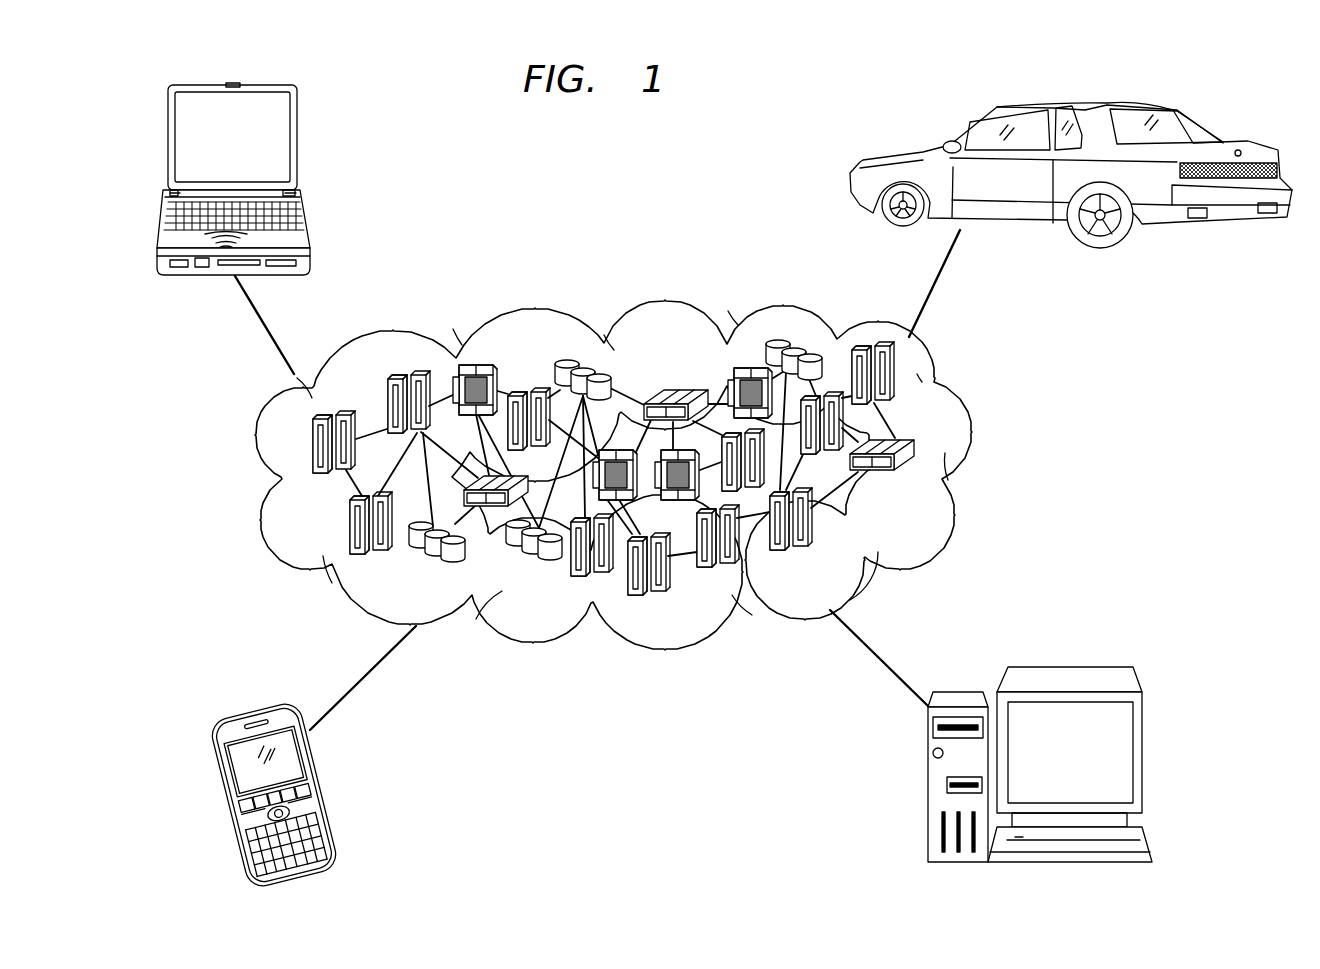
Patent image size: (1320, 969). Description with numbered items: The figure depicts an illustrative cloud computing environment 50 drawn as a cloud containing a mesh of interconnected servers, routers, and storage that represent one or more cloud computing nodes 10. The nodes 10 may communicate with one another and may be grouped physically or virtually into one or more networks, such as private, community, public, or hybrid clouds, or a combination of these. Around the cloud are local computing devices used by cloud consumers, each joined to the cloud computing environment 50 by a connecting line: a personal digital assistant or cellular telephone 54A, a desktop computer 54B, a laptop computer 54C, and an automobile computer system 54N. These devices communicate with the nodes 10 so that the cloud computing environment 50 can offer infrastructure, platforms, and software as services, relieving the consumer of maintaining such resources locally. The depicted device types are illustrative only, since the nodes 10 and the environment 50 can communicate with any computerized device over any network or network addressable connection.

The cloud computing nodes 10 is at (934, 484).
The cloud computing environment 50 is at (968, 398).
The personal digital assistant or cellular telephone 54A is at (216, 779).
The desktop computer 54B is at (1070, 668).
The laptop computer 54C is at (168, 130).
The automobile computer system 54N is at (1248, 150).